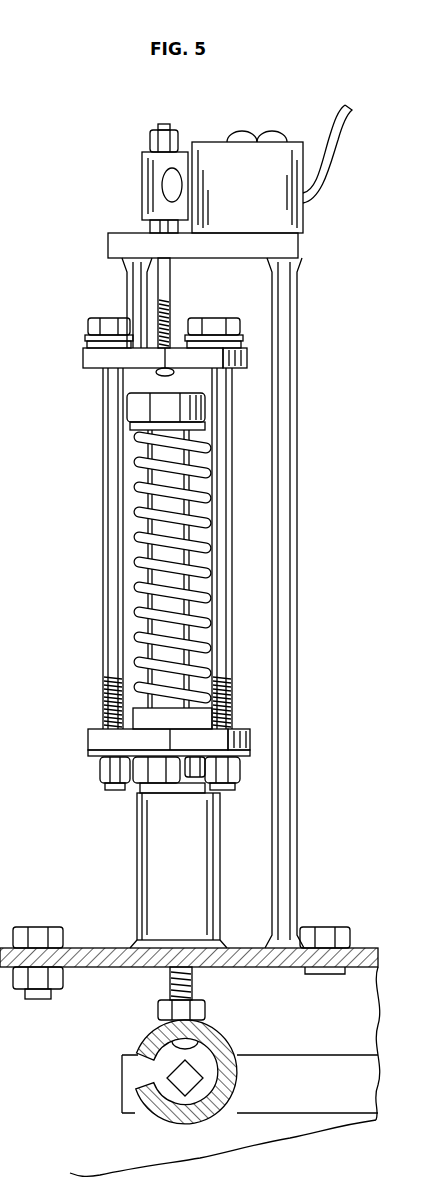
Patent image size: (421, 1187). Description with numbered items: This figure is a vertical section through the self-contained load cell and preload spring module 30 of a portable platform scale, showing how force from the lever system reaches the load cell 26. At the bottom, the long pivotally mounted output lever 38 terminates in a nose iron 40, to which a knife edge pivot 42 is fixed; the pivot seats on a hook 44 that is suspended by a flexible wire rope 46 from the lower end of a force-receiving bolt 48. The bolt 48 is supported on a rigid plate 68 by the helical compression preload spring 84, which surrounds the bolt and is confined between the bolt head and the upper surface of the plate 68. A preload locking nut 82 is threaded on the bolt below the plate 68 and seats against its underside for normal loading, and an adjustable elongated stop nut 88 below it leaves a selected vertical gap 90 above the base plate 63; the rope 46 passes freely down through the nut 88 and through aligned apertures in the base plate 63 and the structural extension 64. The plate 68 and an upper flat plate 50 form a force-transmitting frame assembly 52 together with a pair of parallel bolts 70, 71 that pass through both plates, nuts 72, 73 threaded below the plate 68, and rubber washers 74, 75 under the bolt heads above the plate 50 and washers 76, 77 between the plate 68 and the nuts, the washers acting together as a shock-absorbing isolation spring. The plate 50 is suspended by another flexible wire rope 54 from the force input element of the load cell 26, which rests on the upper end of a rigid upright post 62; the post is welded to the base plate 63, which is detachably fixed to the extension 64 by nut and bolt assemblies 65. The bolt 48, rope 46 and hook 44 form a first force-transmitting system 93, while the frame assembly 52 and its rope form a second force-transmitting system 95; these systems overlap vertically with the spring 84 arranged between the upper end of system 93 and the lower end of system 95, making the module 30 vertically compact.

The load cell 26 is at (292, 140).
The self-contained load cell and preload spring module 30 is at (100, 592).
The output lever 38 is at (320, 1055).
The nose iron 40 is at (122, 1113).
The knife edge pivot 42 is at (170, 1078).
The hook 44 is at (185, 1124).
The flexible wire rope 46 is at (167, 942).
The force-receiving bolt 48 is at (140, 528).
The plate 50 is at (83, 360).
The force-transmitting frame assembly 52 is at (230, 415).
The flexible wire rope 54 is at (166, 310).
The post 62 is at (291, 497).
The base plate 63 is at (90, 950).
The structural extension 64 is at (362, 951).
The nut and bolt assemblies 65 is at (35, 935).
The plate 68 is at (100, 730).
The bolt 70 is at (113, 473).
The bolt 71 is at (222, 463).
The nut 72 is at (105, 771).
The nut 73 is at (240, 773).
The elastically deformable washer 74 is at (88, 343).
The elastically deformable washer 75 is at (240, 343).
The elastically deformable washer 76 is at (95, 753).
The elastically deformable washer 77 is at (250, 752).
The preload locking nut 82 is at (162, 771).
The preload spring 84 is at (206, 551).
The stop nut 88 is at (211, 882).
The vertical gap 90 is at (218, 947).
The first force-transmitting system 93 is at (213, 1015).
The second force-transmitting system 95 is at (102, 385).